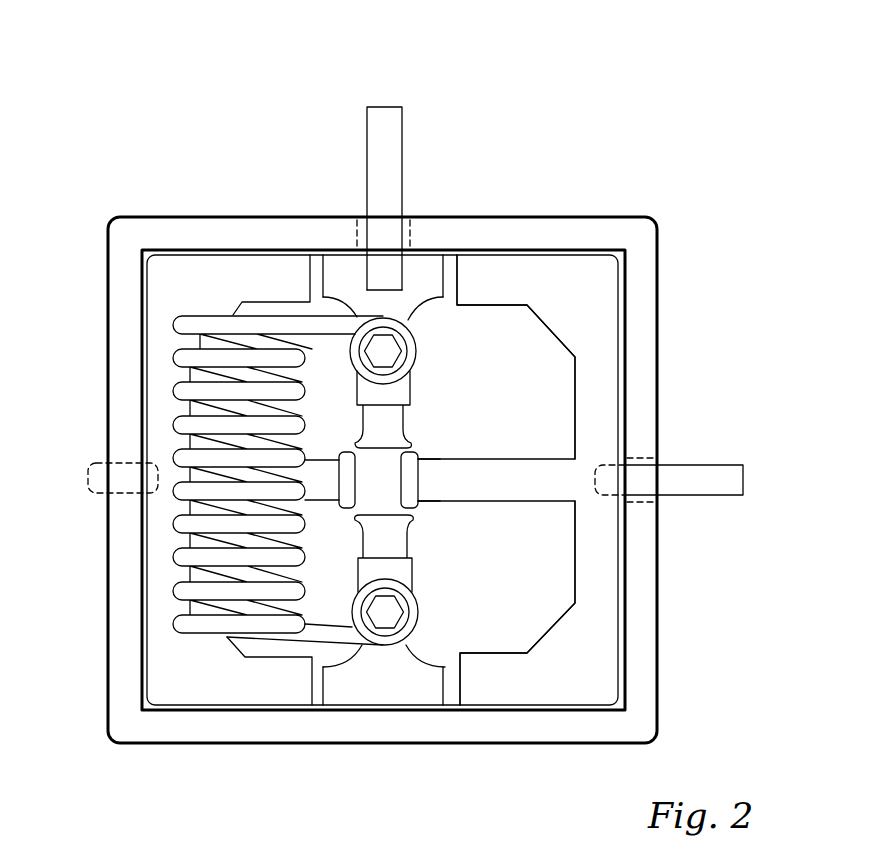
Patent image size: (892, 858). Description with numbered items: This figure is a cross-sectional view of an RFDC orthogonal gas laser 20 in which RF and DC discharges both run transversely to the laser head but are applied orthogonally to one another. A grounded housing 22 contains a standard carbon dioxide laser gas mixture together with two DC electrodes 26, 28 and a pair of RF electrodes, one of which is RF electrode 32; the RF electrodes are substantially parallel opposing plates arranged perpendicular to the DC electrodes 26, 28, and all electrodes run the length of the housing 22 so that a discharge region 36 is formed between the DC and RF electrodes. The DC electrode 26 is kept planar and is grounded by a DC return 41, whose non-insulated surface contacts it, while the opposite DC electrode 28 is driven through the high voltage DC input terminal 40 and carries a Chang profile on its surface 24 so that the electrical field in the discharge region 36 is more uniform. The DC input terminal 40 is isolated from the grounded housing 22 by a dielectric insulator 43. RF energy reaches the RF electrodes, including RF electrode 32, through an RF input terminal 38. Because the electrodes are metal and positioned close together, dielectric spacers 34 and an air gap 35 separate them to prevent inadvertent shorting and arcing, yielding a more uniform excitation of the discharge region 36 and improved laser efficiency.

The RFDC orthogonal gas laser 20 is at (326, 70).
The housing 22 is at (200, 230).
The surface 24 is at (400, 478).
The DC electrode 26 is at (341, 483).
The DC electrode 28 is at (523, 502).
The RF electrode 32 is at (407, 517).
The dielectric spacers 34 is at (275, 217).
The air gap 35 is at (307, 250).
The discharge region 36 is at (382, 482).
The RF input terminal 38 is at (366, 167).
The high voltage DC input terminal 40 is at (708, 465).
The DC return 41 is at (100, 467).
The dielectric insulator 43 is at (403, 203).